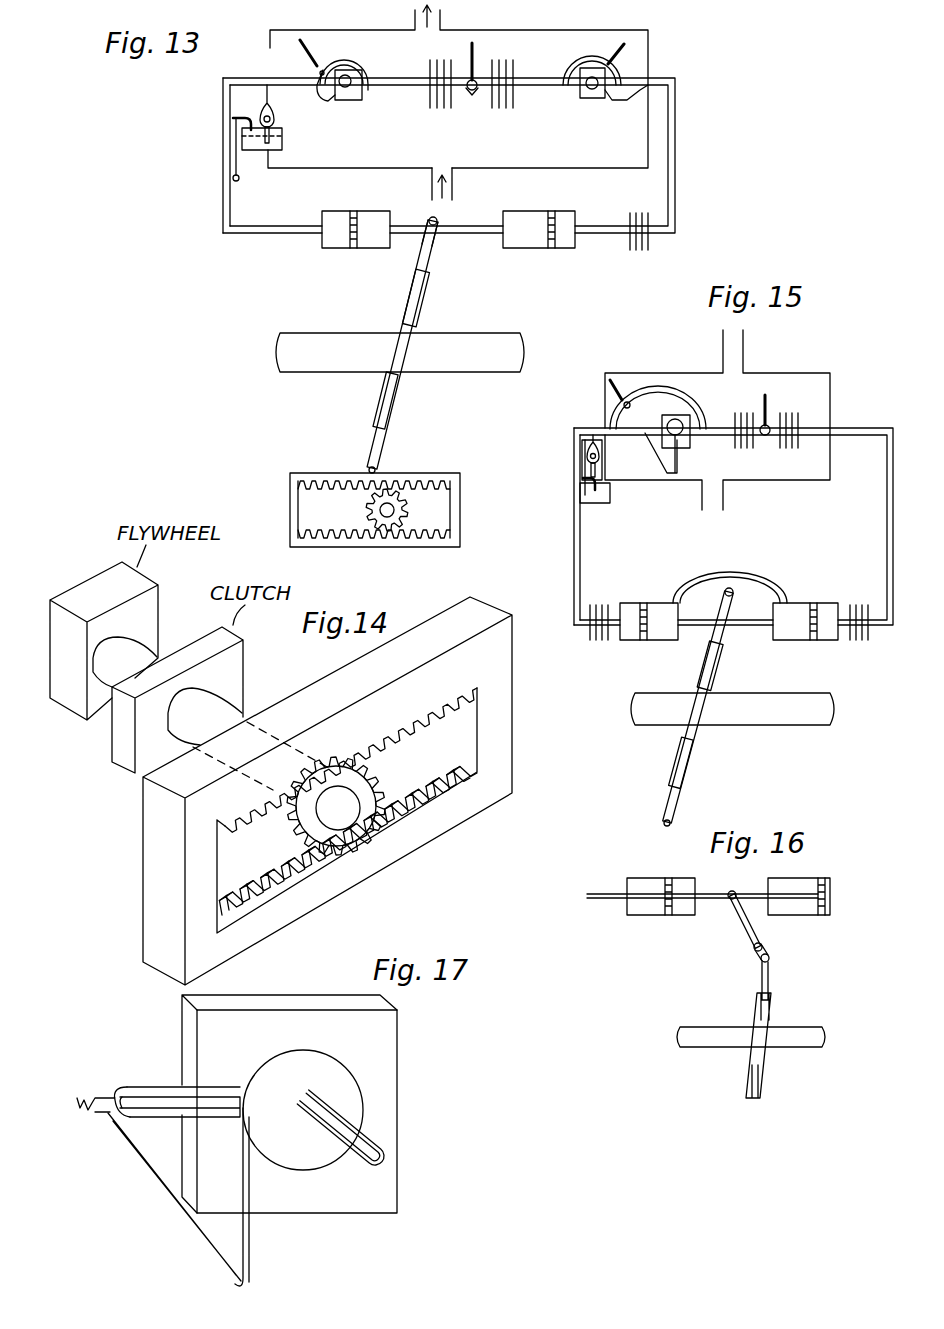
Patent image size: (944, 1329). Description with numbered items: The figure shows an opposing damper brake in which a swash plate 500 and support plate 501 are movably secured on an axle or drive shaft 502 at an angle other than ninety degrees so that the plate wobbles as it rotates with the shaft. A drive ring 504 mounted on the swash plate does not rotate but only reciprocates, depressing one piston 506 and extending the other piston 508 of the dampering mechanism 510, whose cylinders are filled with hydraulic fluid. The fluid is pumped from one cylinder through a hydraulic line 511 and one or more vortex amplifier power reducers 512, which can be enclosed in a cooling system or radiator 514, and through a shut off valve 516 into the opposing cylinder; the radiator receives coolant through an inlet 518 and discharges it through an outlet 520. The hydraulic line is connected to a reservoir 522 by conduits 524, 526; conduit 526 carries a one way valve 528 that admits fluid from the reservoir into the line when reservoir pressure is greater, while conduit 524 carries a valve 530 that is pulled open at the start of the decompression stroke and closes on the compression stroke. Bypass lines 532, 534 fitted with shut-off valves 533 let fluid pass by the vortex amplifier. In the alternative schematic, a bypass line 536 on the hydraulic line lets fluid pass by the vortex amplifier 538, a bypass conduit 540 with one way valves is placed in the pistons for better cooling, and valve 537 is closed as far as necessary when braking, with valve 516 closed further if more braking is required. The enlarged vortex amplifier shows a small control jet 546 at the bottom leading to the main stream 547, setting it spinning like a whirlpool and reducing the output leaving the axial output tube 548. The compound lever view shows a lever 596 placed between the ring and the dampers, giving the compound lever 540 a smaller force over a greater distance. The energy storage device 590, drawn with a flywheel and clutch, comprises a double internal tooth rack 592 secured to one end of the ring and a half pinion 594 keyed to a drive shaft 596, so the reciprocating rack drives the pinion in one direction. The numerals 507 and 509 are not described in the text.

In FIG. 13, the swash plate 500 is at (398, 335).
In FIG. 13, the support plate 501 is at (420, 322).
In FIG. 13, the axle or drive shaft 502 is at (476, 362).
In FIG. 13, the drive ring 504 is at (431, 252).
In FIG. 16, the drive ring 504 is at (769, 983).
In FIG. 13, the piston 506 is at (350, 248).
In FIG. 13, the solenoid 507 is at (322, 215).
In FIG. 13, the piston 508 is at (548, 250).
In FIG. 13, the coil 509 is at (567, 240).
In FIG. 13, the dampering mechanism 510 is at (688, 117).
In FIG. 13, the hydraulic line 511 is at (224, 155).
In FIG. 15, the hydraulic line 511 is at (574, 532).
In FIG. 13, the vortex amplifier power reducer 512 is at (348, 100).
In FIG. 13, the cooling system or radiator 514 is at (284, 28).
In FIG. 13, the shut off valve 516 is at (474, 80).
In FIG. 13, the inlet 518 is at (453, 172).
In FIG. 13, the outlet 520 is at (439, 72).
In FIG. 13, the reservoir 522 is at (242, 135).
In FIG. 13, the conduit 524 is at (235, 118).
In FIG. 13, the conduit 526 is at (262, 90).
In FIG. 13, the one way valve 528 is at (273, 112).
In FIG. 13, the valve 530 is at (233, 188).
In FIG. 13, the bypass line 532 is at (362, 66).
In FIG. 13, the shut-off valve 533 is at (269, 48).
In FIG. 13, the bypass line 534 is at (588, 60).
In FIG. 15, the bypass line 536 is at (633, 398).
In FIG. 15, the valve 537 is at (612, 394).
In FIG. 15, the vortex amplifier 538 is at (669, 474).
In FIG. 15, the bypass conduit 540 is at (768, 580).
In FIG. 16, the bypass conduit 540 is at (768, 952).
In FIG. 17, the control jet 546 is at (245, 1238).
In FIG. 17, the main stream 547 is at (130, 1090).
In FIG. 17, the axial output tube 548 is at (387, 1160).
In FIG. 13, the energy storage device 590 is at (280, 500).
In FIG. 14, the energy storage device 590 is at (414, 866).
In FIG. 14, the double internal tooth rack 592 is at (278, 912).
In FIG. 13, the half pinion 594 is at (388, 518).
In FIG. 14, the half pinion 594 is at (343, 838).
In FIG. 14, the drive shaft 596 is at (343, 815).
In FIG. 16, the drive shaft 596 is at (745, 935).